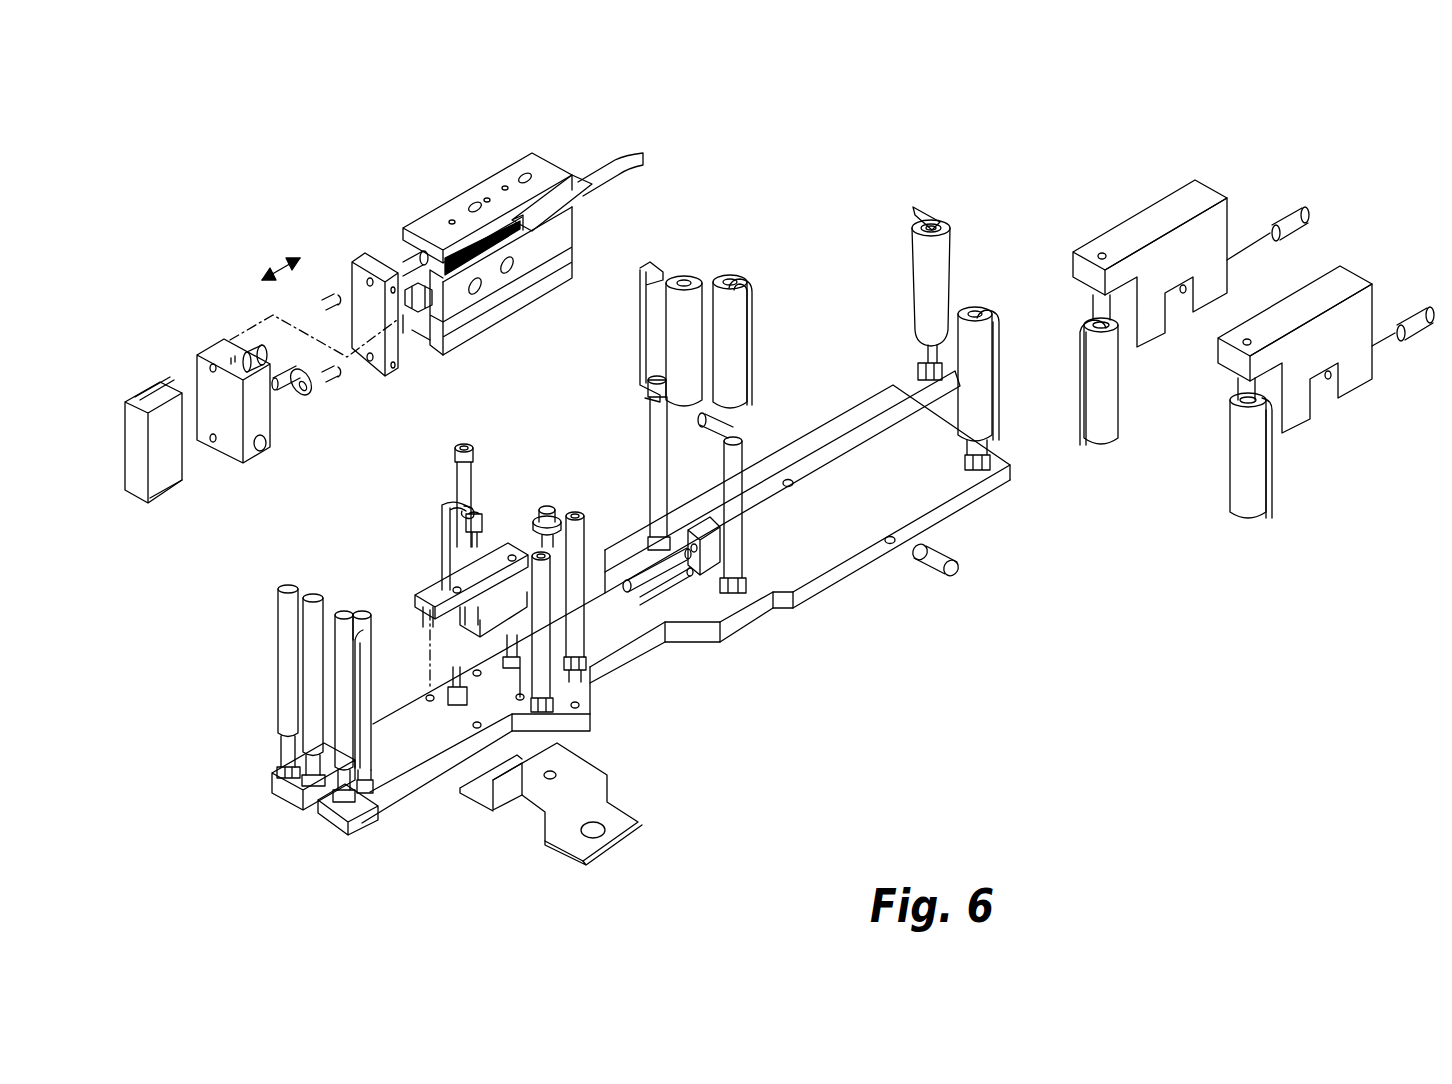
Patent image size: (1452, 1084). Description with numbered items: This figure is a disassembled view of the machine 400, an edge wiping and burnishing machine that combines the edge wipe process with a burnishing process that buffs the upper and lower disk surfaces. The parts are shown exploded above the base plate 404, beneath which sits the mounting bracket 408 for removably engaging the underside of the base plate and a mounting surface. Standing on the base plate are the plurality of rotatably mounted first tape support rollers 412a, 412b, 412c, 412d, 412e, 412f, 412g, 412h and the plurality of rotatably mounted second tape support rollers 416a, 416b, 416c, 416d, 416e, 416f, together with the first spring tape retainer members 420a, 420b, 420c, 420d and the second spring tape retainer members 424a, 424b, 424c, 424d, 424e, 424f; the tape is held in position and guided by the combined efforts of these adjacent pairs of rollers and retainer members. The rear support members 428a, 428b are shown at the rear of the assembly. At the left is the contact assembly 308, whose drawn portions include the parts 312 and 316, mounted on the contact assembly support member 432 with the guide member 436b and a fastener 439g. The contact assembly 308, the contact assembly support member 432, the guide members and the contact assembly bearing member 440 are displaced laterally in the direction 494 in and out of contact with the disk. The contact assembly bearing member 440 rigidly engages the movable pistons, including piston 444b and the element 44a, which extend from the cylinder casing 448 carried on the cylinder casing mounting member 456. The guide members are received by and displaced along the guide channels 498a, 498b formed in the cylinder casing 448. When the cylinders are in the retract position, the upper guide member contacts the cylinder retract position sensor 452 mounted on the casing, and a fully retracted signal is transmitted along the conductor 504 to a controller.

The contact assembly 308 is at (107, 515).
The block 312 is at (137, 503).
The block portion 316 is at (170, 495).
The machine 400 is at (793, 128).
The base plate 404 is at (800, 608).
The mounting bracket 408 is at (565, 855).
The first tape support roller 412a is at (242, 668).
The first tape support roller 412b is at (312, 580).
The first tape support roller 412c is at (340, 600).
The first tape support roller 412d is at (388, 562).
The first tape support roller 412e is at (453, 527).
The first tape support roller 412f is at (470, 478).
The first tape support roller 412g is at (545, 685).
The first tape support roller 412h is at (575, 522).
The second tape support roller 416a is at (690, 278).
The second tape support roller 416b is at (752, 282).
The second tape support roller 416c is at (932, 215).
The second tape support roller 416d is at (990, 310).
The second tape support roller 416e is at (1103, 450).
The second tape support roller 416f is at (1242, 522).
The first spring tape retainer member 420a is at (277, 615).
The first spring tape retainer member 420b is at (380, 770).
The first spring tape retainer member 420c is at (443, 500).
The first spring tape retainer member 420d is at (532, 555).
The second spring tape retainer member 424a is at (640, 252).
The second spring tape retainer member 424b is at (752, 348).
The second spring tape retainer member 424c is at (913, 215).
The second spring tape retainer member 424d is at (1000, 440).
The second spring tape retainer member 424e is at (1080, 335).
The second spring tape retainer member 424f is at (1278, 497).
The rear support member 428a is at (1195, 180).
The rear support member 428b is at (1340, 262).
The contact assembly support member 432 is at (200, 345).
The guide member 436b is at (265, 445).
The screw 439g is at (295, 398).
The contact assembly bearing member 440 is at (358, 260).
The bolt 44a is at (402, 258).
The movable piston 444b is at (410, 345).
The cylinder casing 448 is at (480, 178).
The cylinder retract position sensor 452 is at (575, 170).
The cylinder casing mounting member 456 is at (420, 630).
The direction 494 is at (282, 262).
The guide channel 498a is at (515, 250).
The guide channel 498b is at (520, 310).
The conductor 504 is at (640, 148).